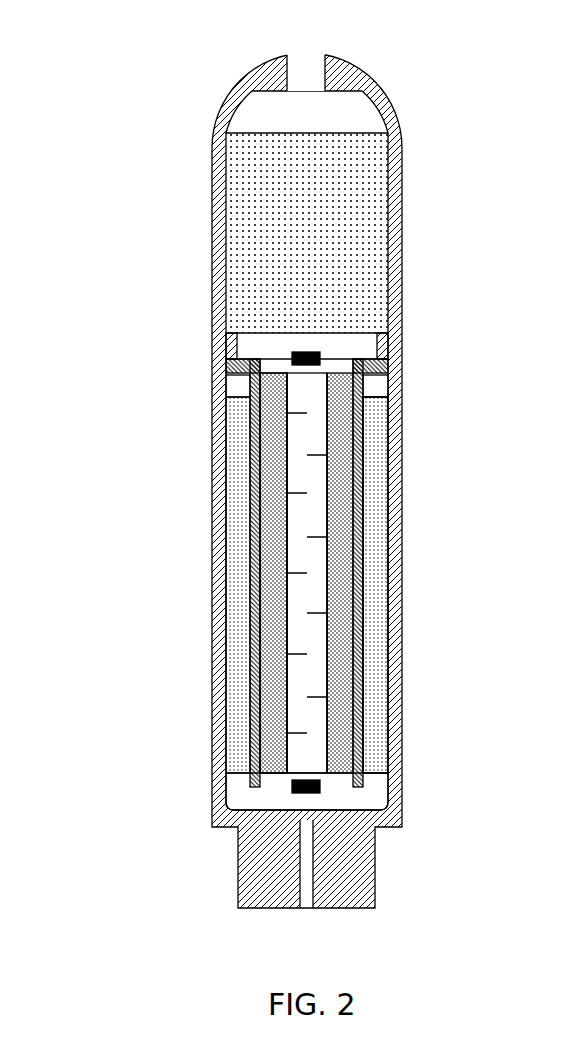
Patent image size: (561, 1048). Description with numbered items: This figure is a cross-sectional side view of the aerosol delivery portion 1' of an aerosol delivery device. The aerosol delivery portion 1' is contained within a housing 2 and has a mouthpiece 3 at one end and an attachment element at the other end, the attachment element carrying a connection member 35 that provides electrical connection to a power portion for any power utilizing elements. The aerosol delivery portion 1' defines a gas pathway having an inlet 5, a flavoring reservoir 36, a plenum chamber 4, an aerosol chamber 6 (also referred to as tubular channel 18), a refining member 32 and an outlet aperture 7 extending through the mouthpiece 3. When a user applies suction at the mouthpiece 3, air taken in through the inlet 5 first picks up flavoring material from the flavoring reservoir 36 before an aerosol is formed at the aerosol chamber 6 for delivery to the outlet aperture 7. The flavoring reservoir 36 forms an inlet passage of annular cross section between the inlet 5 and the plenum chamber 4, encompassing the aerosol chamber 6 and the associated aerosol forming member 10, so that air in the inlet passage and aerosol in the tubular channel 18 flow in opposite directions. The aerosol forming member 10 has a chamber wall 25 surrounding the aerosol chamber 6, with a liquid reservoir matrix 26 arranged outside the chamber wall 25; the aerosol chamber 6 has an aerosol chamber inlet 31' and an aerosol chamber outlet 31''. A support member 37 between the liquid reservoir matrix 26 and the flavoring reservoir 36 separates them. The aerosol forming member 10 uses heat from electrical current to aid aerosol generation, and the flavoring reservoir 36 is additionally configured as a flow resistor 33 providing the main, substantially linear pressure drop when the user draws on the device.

The aerosol delivery portion 1' is at (216, 440).
The housing 2 is at (400, 262).
The mouthpiece 3 is at (378, 88).
The plenum chamber 4 is at (373, 798).
The inlet 5 is at (392, 382).
The aerosol chamber 6 is at (382, 573).
The tubular channel 18 is at (313, 432).
The outlet aperture 7 is at (292, 65).
The aerosol forming member 10 is at (308, 597).
The chamber wall 25 is at (283, 673).
The liquid reservoir matrix 26 is at (270, 517).
The aerosol chamber inlet 31' is at (232, 752).
The aerosol chamber outlet 31'' is at (238, 344).
The refining member 32 is at (318, 228).
The flow resistor 33 is at (403, 580).
The connection member 35 is at (307, 873).
The flavoring reservoir 36 is at (386, 537).
The support member 37 is at (250, 455).